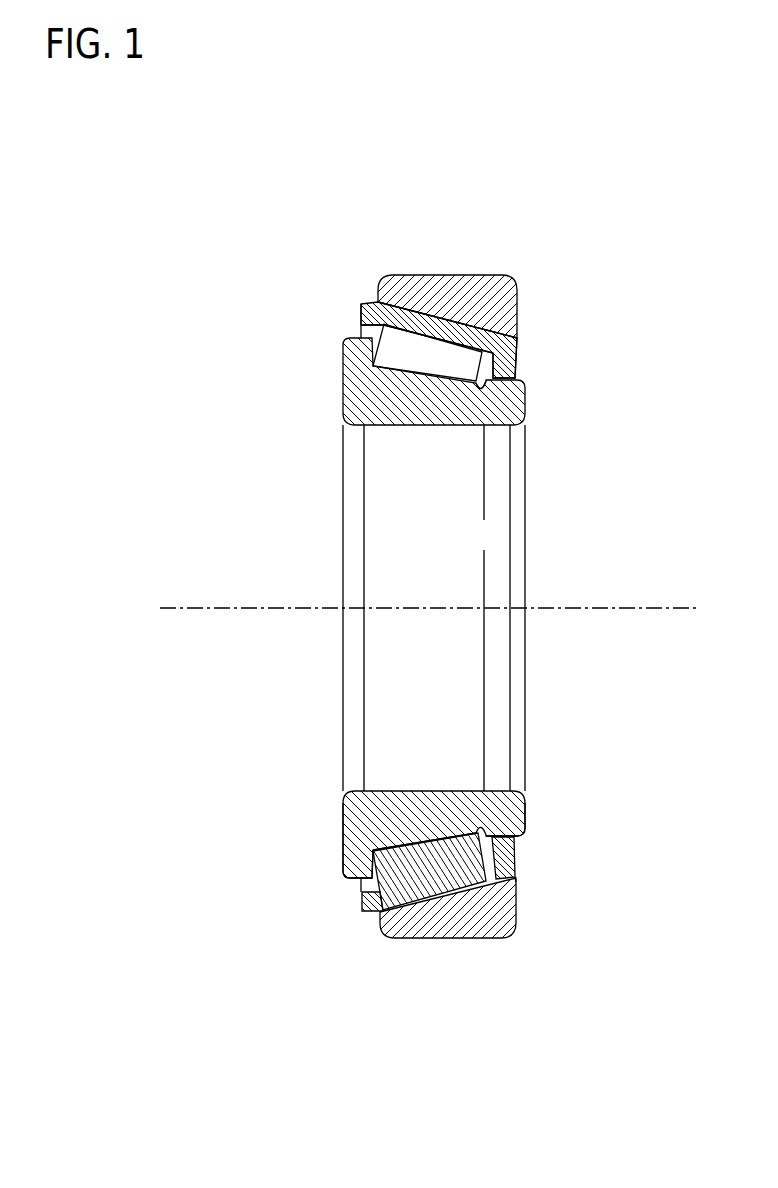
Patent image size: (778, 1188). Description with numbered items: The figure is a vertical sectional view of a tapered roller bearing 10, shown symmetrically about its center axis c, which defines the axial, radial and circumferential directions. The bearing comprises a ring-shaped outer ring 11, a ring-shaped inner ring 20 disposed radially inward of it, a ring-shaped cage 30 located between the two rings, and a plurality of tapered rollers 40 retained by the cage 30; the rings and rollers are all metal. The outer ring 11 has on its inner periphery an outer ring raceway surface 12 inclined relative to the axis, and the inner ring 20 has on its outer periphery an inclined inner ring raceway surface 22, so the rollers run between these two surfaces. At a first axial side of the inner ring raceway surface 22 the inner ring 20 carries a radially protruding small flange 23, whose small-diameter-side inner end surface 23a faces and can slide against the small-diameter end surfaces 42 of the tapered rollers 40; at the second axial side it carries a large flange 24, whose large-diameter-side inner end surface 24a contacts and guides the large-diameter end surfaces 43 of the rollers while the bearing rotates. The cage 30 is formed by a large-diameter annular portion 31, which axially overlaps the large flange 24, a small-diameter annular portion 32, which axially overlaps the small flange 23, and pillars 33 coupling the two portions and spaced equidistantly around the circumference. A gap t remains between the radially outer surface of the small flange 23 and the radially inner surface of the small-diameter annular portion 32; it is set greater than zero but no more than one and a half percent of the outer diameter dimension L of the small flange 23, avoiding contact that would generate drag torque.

The tapered roller bearing 10 is at (537, 415).
The outer ring 11 is at (462, 275).
The outer ring raceway surface 12 is at (511, 308).
The inner ring 20 is at (344, 813).
The inner ring raceway surface 22 is at (458, 832).
The small flange 23 is at (523, 809).
The small-diameter-side inner end surface 23a is at (486, 386).
The large flange 24 is at (348, 880).
The large-diameter-side inner end surface 24a is at (343, 857).
The cage 30 is at (527, 332).
The large-diameter annular portion 31 is at (372, 306).
The small-diameter annular portion 32 is at (516, 358).
The pillars 33 is at (415, 318).
The tapered rollers 40 is at (488, 882).
The small-diameter end surfaces 42 is at (515, 845).
The large-diameter end surfaces 43 is at (363, 915).
The outer diameter dimension L is at (483, 608).
The gap t is at (516, 882).
The center axis c is at (440, 608).